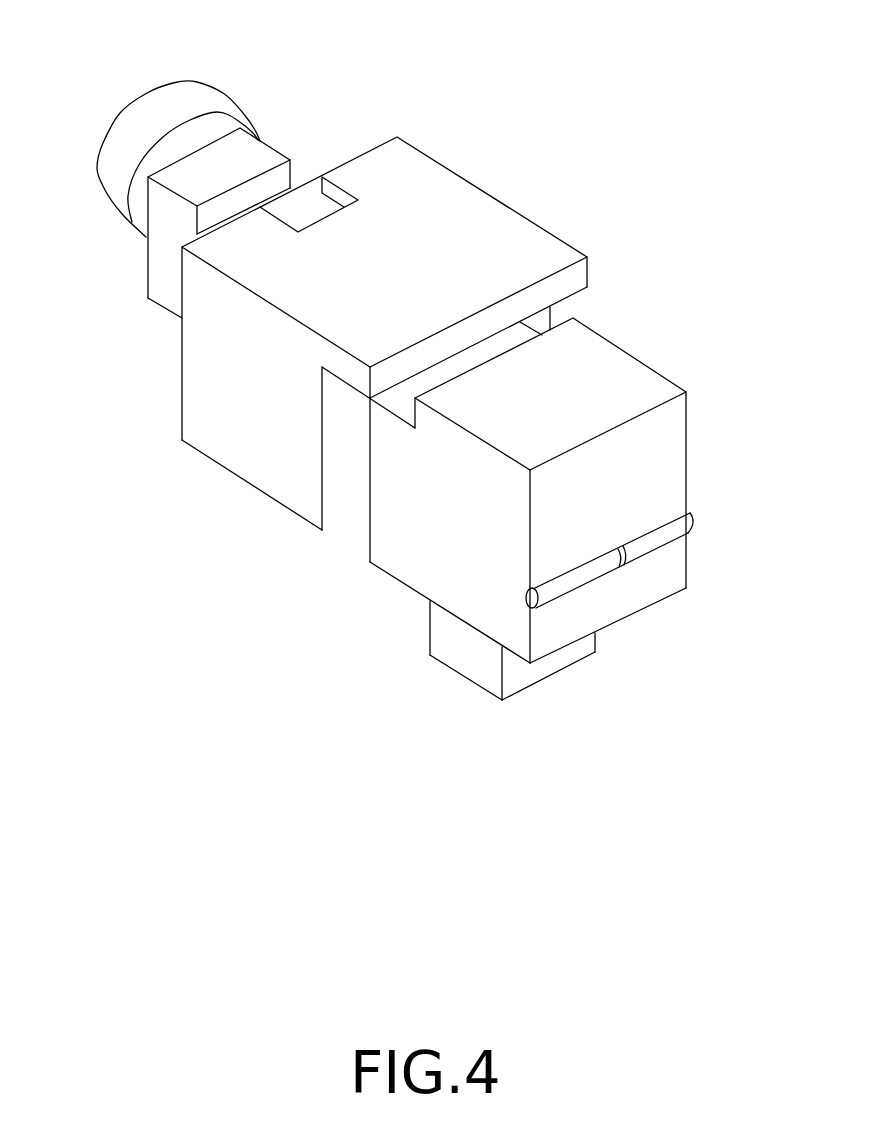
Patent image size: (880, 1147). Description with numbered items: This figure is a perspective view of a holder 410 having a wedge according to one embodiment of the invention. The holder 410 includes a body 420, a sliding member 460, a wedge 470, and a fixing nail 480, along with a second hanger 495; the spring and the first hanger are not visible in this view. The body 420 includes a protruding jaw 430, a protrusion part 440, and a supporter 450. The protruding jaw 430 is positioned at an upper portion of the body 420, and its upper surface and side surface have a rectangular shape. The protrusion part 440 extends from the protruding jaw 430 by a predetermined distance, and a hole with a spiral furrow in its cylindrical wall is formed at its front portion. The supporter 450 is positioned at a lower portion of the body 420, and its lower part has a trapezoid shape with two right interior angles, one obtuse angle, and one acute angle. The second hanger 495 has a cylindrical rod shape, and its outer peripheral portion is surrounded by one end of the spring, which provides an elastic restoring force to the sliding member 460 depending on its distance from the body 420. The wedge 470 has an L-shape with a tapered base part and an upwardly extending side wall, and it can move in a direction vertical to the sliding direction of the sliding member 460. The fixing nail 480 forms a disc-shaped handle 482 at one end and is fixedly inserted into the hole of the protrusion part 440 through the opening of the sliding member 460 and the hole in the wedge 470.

The holder 410 is at (462, 872).
The body 420 is at (360, 585).
The protruding jaw 430 is at (590, 368).
The protrusion part 440 is at (305, 200).
The supporter 450 is at (468, 647).
The sliding member 460 is at (215, 432).
The wedge 470 is at (168, 292).
The fixing nail 480 is at (182, 179).
The disc-shaped handle 482 is at (160, 110).
The second hanger 495 is at (695, 517).